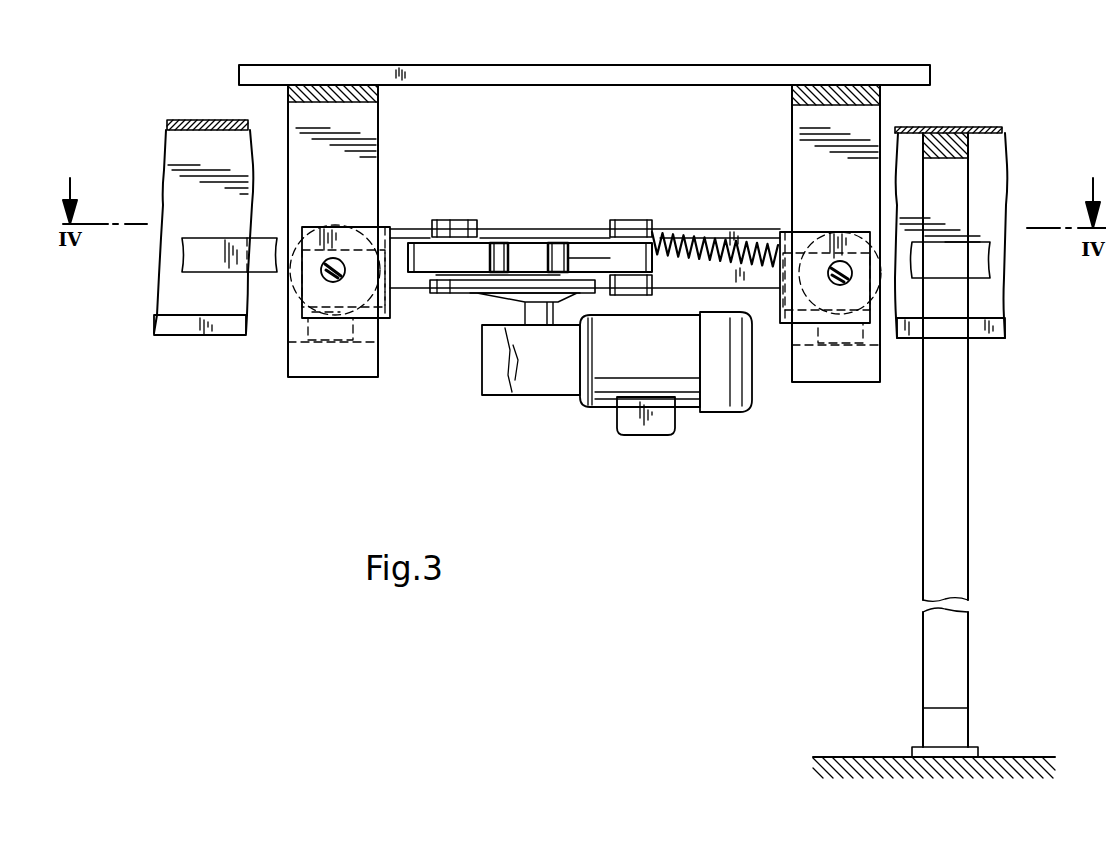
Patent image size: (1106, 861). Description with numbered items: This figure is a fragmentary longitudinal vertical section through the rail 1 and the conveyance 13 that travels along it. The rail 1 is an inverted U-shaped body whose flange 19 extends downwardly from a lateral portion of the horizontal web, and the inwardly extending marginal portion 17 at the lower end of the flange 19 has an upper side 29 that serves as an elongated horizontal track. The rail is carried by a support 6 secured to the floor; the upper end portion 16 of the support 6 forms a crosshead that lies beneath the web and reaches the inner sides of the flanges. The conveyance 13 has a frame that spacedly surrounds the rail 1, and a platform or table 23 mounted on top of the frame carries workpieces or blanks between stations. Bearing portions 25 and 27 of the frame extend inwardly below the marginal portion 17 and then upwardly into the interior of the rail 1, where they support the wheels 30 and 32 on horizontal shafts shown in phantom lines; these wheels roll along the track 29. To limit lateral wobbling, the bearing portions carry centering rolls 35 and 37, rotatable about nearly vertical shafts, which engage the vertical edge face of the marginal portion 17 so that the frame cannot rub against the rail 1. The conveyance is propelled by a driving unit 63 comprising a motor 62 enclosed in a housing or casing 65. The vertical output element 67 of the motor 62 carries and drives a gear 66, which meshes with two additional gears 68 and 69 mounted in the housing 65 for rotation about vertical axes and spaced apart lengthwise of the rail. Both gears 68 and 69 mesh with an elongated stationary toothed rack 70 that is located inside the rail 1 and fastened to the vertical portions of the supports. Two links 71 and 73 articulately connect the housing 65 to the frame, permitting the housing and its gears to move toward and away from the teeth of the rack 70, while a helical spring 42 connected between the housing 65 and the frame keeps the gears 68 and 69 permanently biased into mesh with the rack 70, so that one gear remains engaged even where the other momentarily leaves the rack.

The rail 1 is at (584, 103).
The support 6 is at (934, 455).
The conveyance 13 is at (584, 205).
The upper end portion of support 16 is at (981, 146).
The marginal portion 17 is at (600, 344).
The flange 19 is at (582, 221).
The platform or table 23 is at (584, 56).
The bearing portion 25 is at (848, 238).
The bearing portion 27 is at (364, 288).
The track 29 is at (581, 311).
The wheel 30 is at (340, 247).
The wheel 32 is at (830, 258).
The centering roll 35 is at (353, 334).
The centering roll 37 is at (836, 352).
The helical spring 42 is at (715, 233).
The motor 62 is at (666, 391).
The driving unit 63 is at (531, 398).
The housing or casing 65 is at (585, 223).
The gear 66 is at (529, 228).
The vertical output element 67 is at (515, 310).
The gear 68 is at (589, 226).
The gear 69 is at (525, 228).
The toothed rack 70 is at (587, 253).
The link 71 is at (512, 238).
The link 73 is at (631, 239).